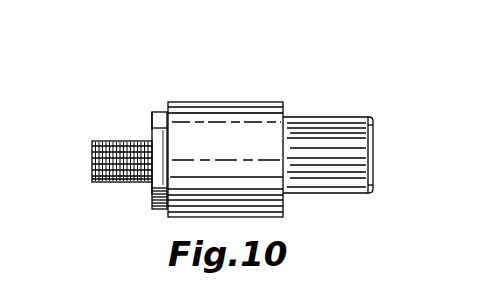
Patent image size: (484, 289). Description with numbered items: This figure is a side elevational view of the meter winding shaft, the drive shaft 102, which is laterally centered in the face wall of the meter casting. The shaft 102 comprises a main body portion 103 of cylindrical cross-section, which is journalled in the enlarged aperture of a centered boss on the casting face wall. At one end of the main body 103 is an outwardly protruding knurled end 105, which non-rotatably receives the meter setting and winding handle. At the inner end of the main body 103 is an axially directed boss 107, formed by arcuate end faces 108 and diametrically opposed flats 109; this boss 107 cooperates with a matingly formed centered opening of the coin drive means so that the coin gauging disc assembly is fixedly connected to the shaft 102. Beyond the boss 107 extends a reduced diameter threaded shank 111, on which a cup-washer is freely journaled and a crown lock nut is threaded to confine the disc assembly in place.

The drive shaft 102 is at (249, 100).
The main body portion 103 is at (200, 121).
The knurled end 105 is at (341, 118).
The axially directed boss 107 is at (151, 119).
The arcuate end faces 108 is at (159, 112).
The diametrically opposed flats 109 is at (154, 188).
The reduced diameter threaded shank 111 is at (92, 173).